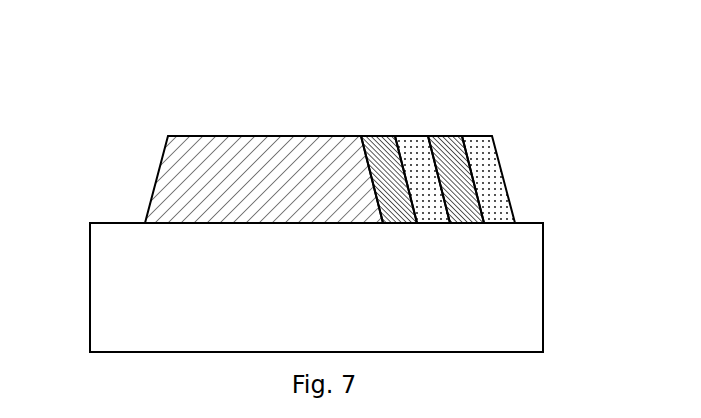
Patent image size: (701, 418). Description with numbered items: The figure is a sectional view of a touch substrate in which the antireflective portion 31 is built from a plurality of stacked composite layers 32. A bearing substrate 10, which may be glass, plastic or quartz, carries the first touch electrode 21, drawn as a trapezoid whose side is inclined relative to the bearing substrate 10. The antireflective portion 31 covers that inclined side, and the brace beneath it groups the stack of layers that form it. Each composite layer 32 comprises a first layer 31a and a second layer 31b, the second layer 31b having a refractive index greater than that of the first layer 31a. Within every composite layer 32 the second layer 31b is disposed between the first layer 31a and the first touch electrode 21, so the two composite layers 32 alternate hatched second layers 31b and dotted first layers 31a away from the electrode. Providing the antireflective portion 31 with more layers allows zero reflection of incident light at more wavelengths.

The bearing substrate 10 is at (468, 324).
The first touch electrode 21 is at (228, 196).
The antireflective portion 31 is at (515, 226).
The first layer 31a is at (412, 168).
The second layer 31b is at (362, 137).
The composite layer 32 is at (282, 72).